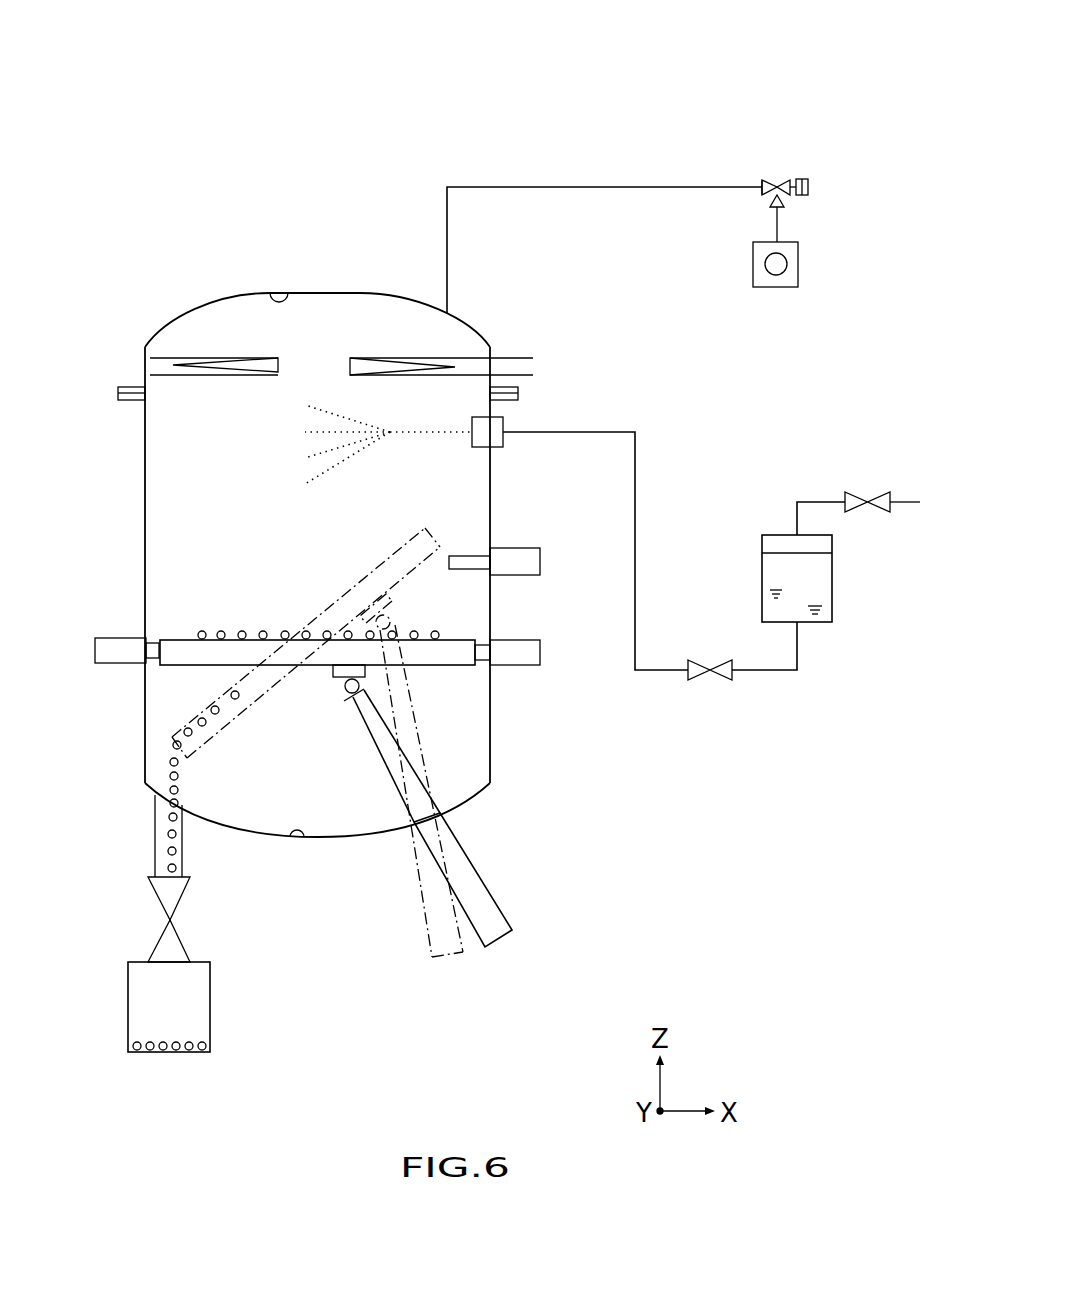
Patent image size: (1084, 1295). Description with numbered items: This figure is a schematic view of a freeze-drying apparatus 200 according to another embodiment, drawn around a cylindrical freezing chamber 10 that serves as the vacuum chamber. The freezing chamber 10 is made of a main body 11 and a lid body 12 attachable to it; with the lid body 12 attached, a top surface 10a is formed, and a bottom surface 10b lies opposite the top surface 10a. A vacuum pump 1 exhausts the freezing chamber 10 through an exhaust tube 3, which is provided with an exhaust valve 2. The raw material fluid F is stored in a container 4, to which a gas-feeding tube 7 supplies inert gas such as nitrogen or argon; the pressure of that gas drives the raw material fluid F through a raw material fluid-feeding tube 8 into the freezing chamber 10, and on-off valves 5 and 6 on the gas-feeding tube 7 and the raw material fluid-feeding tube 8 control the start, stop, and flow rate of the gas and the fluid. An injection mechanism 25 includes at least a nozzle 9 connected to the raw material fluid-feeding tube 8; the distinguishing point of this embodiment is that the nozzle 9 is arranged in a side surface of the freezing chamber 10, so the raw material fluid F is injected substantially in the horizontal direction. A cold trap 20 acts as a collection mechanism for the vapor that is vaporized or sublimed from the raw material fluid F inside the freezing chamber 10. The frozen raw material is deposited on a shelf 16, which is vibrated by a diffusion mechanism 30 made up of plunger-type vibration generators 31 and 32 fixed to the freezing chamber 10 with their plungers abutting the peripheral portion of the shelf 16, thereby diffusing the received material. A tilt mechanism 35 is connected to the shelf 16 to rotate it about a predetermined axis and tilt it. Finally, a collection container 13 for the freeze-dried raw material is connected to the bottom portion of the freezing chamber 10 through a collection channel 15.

The freeze-drying apparatus 200 is at (397, 84).
The vacuum pump 1 is at (767, 287).
The exhaust valve 2 is at (433, 357).
The exhaust tube 3 is at (604, 187).
The container 4 is at (799, 578).
The on-off valve 5 is at (853, 490).
The on-off valve 6 is at (698, 684).
The gas-feeding tube 7 is at (815, 502).
The raw material fluid-feeding tube 8 is at (637, 512).
The nozzle 9 is at (500, 448).
The freezing chamber 10 is at (138, 510).
The top surface 10a is at (287, 293).
The bottom surface 10b is at (297, 840).
The main body 11 is at (490, 707).
The lid body 12 is at (363, 293).
The collection container 13 is at (210, 1003).
The collection channel 15 is at (155, 819).
The shelf 16 is at (174, 665).
The cold trap 20 is at (508, 349).
The injection mechanism 25 is at (450, 440).
The diffusion mechanism 30 is at (538, 604).
The vibration generator 31 is at (95, 650).
The vibration generator 32 is at (515, 564).
The tilt mechanism 35 is at (494, 846).
The raw material fluid F is at (773, 570).